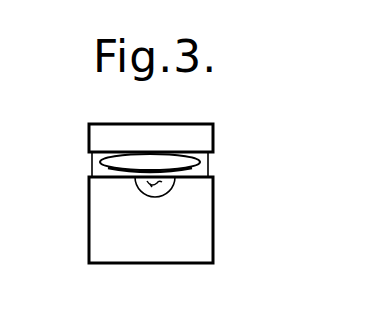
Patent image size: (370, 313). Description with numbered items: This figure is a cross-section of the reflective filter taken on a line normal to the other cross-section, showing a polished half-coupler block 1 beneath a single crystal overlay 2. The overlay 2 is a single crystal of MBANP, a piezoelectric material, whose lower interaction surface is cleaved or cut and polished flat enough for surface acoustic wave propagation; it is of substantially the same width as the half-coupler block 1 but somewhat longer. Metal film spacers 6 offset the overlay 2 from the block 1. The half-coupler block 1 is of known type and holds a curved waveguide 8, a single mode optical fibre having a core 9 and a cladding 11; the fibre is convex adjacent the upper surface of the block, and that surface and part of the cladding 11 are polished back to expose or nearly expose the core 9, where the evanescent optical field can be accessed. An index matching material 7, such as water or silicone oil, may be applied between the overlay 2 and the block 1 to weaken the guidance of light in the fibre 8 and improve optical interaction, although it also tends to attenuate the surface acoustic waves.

The half-coupler block 1 is at (217, 266).
The single crystal overlay 2 is at (228, 134).
The metal film spacers 6 is at (203, 167).
The index matching material 7 is at (187, 177).
The curved waveguide 8 is at (160, 186).
The core 9 is at (140, 189).
The cladding 11 is at (162, 188).